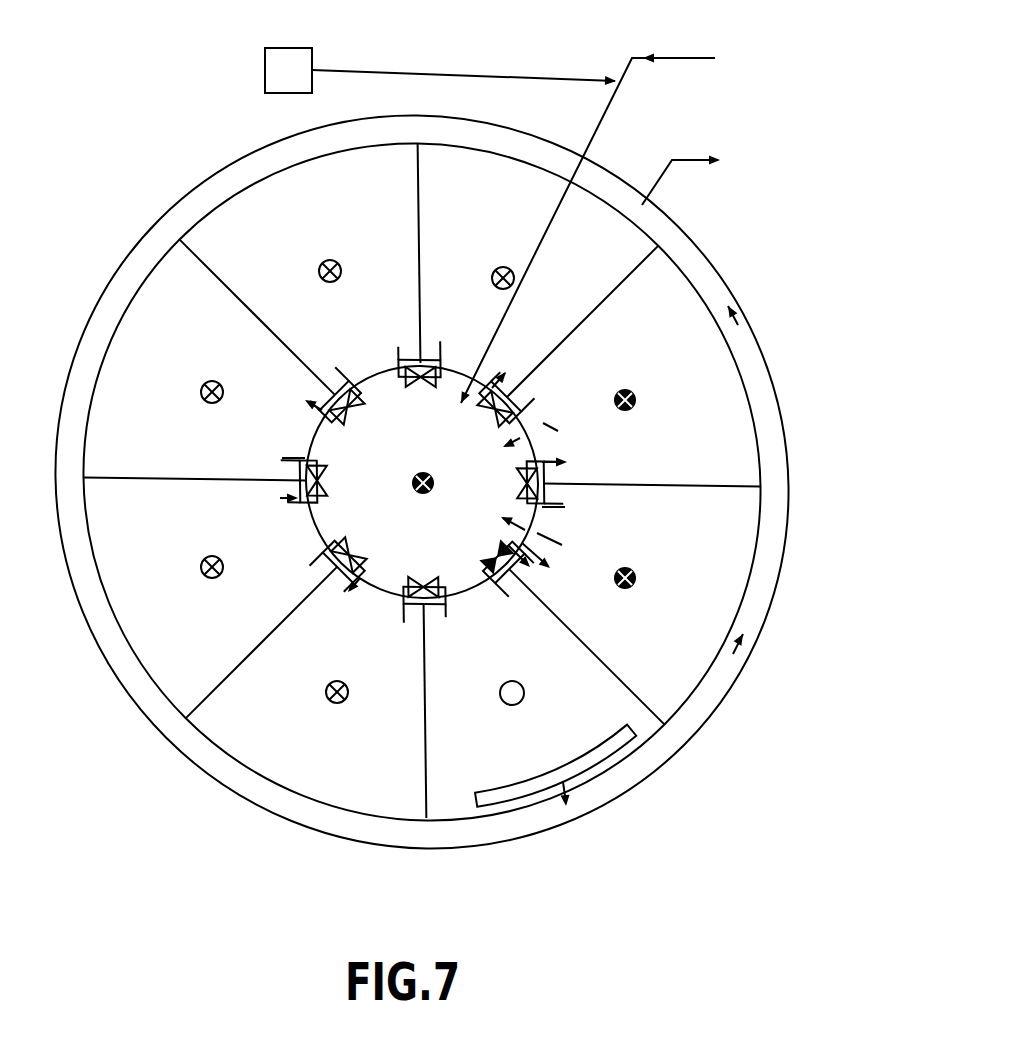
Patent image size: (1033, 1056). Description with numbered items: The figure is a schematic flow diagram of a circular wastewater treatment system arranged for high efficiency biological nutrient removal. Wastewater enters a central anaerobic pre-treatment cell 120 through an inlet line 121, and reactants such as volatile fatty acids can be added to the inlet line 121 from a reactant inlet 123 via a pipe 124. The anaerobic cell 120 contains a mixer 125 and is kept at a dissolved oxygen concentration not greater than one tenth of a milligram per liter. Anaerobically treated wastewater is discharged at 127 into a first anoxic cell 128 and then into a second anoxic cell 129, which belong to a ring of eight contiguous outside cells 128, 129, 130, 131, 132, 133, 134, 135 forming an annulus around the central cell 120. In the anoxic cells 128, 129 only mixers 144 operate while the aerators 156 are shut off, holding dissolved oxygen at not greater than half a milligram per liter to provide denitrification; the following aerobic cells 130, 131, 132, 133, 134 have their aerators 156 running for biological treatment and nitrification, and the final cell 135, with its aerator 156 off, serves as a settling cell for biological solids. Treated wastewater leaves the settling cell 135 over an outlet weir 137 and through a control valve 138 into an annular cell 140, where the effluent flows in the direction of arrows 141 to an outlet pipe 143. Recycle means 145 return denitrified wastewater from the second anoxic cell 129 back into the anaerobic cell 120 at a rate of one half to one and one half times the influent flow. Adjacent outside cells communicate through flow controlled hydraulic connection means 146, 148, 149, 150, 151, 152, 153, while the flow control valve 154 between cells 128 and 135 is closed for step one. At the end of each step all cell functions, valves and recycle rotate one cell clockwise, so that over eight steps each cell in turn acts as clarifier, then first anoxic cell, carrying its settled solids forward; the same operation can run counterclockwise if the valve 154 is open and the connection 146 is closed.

The central anaerobic pre-treatment cell 120 is at (438, 436).
The inlet line 121 is at (664, 58).
The reactant inlet 123 is at (283, 88).
The pipe 124 is at (502, 72).
The mixer 125 is at (413, 489).
The discharge 127 is at (512, 537).
The first anoxic cell 128 is at (705, 626).
The second anoxic cell 129 is at (710, 476).
The aerobic cell 130 is at (600, 286).
The aerobic cell 131 is at (354, 211).
The aerobic cell 132 is at (160, 404).
The aerobic cell 133 is at (155, 531).
The aerobic cell 134 is at (315, 758).
The final settling cell 135 is at (495, 758).
The outlet weir 137 is at (493, 800).
The control valve 138 is at (574, 790).
The annular cell 140 is at (128, 702).
The arrows 141 is at (750, 355).
The outlet pipe 143 is at (692, 160).
The mixers 144 is at (636, 403).
The recycle means 145 is at (540, 430).
The flow controlled hydraulic connection means 146 is at (548, 492).
The flow controlled hydraulic connection means 148 is at (518, 392).
The flow controlled hydraulic connection means 149 is at (404, 362).
The flow controlled hydraulic connection means 150 is at (330, 396).
The flow controlled hydraulic connection means 151 is at (300, 484).
The flow controlled hydraulic connection means 152 is at (327, 580).
The flow controlled hydraulic connection means 153 is at (447, 612).
The flow control valve 154 is at (523, 588).
The aerators 156 is at (340, 263).